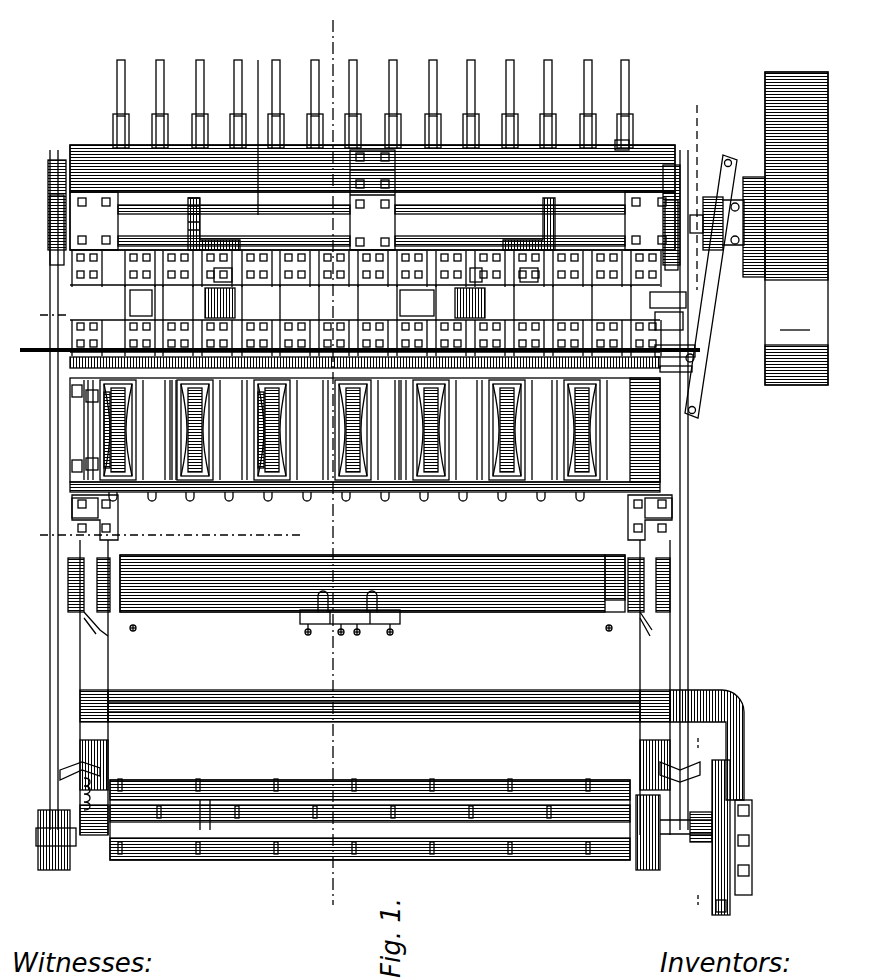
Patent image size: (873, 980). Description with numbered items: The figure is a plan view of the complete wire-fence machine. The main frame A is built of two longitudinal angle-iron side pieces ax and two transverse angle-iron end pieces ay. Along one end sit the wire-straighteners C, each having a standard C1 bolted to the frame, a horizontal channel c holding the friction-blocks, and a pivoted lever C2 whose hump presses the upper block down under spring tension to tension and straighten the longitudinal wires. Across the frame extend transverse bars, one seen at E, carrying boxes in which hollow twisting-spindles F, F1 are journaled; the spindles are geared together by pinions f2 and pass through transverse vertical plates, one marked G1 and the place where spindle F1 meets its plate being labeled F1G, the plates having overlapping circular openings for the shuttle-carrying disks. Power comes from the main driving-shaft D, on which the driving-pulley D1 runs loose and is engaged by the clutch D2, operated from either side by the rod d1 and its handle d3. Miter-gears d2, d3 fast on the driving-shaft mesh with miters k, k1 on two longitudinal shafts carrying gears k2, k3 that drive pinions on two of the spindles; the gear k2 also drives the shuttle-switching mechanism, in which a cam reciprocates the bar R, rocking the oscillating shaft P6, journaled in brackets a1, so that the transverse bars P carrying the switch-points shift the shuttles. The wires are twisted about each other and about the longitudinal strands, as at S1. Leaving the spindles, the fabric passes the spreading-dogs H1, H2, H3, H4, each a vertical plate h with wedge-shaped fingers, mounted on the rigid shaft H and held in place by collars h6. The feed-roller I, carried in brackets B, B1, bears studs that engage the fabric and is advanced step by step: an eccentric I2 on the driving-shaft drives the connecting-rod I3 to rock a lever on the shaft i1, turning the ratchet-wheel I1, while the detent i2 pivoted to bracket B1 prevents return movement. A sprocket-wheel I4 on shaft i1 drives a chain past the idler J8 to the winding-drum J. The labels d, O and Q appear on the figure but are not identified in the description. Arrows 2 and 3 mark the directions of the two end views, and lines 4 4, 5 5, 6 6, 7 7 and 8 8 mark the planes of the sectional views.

The main frame A is at (74, 150).
The bracket B is at (110, 655).
The bracket B1 is at (672, 650).
The wire-straightener C is at (165, 118).
The standard C1 is at (553, 118).
The lever C2 is at (158, 60).
The horizontal channel c is at (620, 145).
The main driving-shaft D is at (259, 127).
The driving-pulley D1 is at (785, 228).
The clutch D2 is at (712, 192).
The shaft d is at (70, 352).
The rod d1 is at (693, 352).
The miter-gear d2 is at (196, 200).
The miter-gear d3 is at (548, 200).
The transverse bar E is at (660, 300).
The hollow spindle F is at (268, 462).
The hollow spindle F1 is at (365, 303).
The roller support F1G is at (397, 472).
The pinion f2 is at (680, 372).
The transverse vertical plate G1 is at (417, 303).
The transverse rigid shaft H is at (490, 614).
The spreading-dog H1 is at (120, 520).
The spreading-dog H2 is at (625, 540).
The spreading-dog H3 is at (322, 594).
The spreading-dog H4 is at (373, 608).
The vertical plate h is at (388, 640).
The collar h6 is at (138, 628).
The feed-roller I is at (530, 862).
The ratchet-wheel I1 is at (538, 700).
The eccentric I2 is at (57, 160).
The connecting-rod I3 is at (52, 630).
The sprocket-wheel I4 is at (752, 828).
The shaft i1 is at (228, 800).
The detent i2 is at (66, 772).
The winding-drum J is at (732, 870).
The idler J8 is at (718, 912).
The miter k is at (222, 238).
The miter k1 is at (505, 250).
The gear k2 is at (222, 275).
The gear k3 is at (528, 238).
The spindle O is at (200, 472).
The transverse bar P is at (172, 482).
The oscillating shaft P6 is at (74, 392).
The block Q is at (72, 502).
The reciprocating bar R is at (141, 303).
The longitudinal strand S1 is at (488, 300).
The bracket a1 is at (78, 445).
The longitudinal angle-iron side piece ax is at (72, 452).
The transverse angle-iron end piece ay is at (296, 200).
The arrow 2 is at (450, 898).
The arrow 3 is at (411, 8).
The section line 4 is at (697, 95).
The section line 5 is at (699, 824).
The section line 6 is at (322, 20).
The section line 7 is at (42, 300).
The section line 8 is at (42, 520).